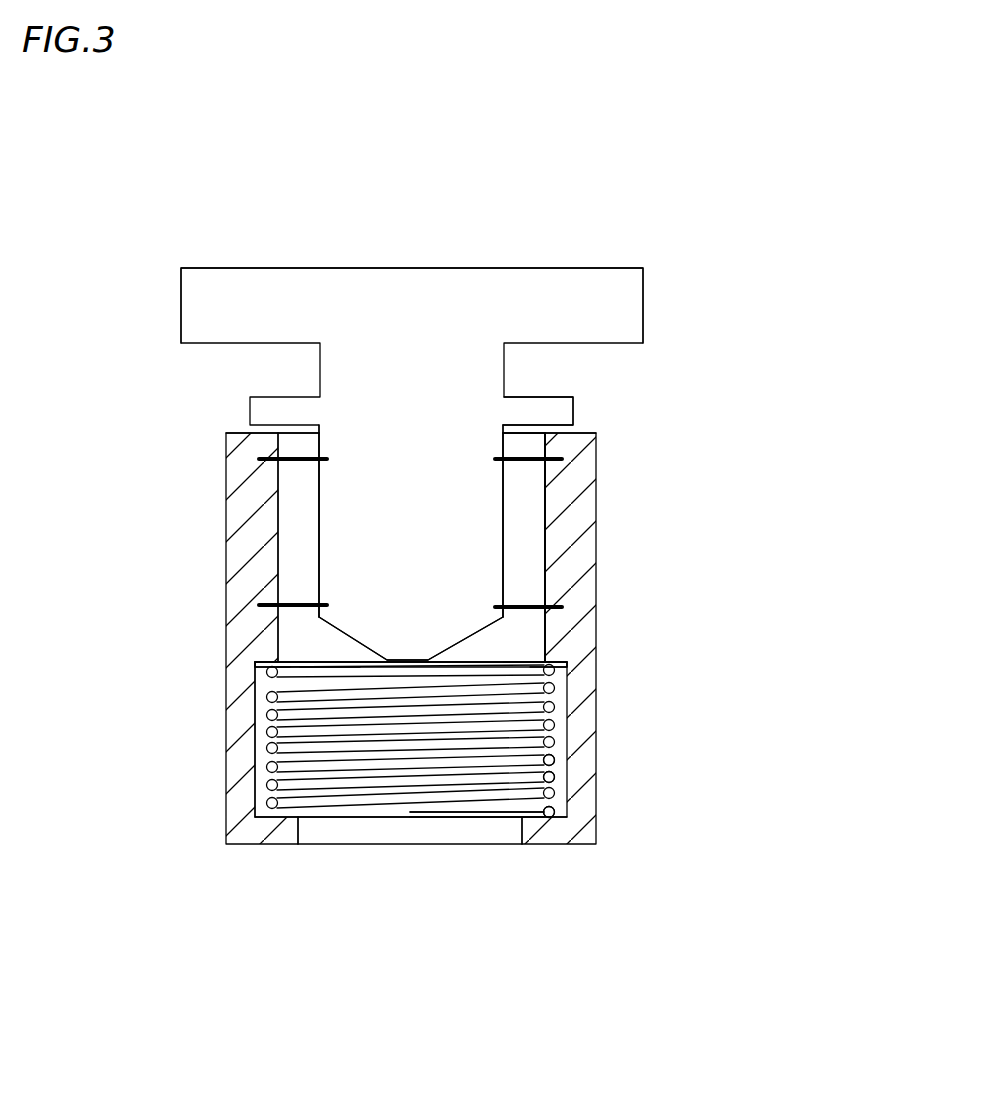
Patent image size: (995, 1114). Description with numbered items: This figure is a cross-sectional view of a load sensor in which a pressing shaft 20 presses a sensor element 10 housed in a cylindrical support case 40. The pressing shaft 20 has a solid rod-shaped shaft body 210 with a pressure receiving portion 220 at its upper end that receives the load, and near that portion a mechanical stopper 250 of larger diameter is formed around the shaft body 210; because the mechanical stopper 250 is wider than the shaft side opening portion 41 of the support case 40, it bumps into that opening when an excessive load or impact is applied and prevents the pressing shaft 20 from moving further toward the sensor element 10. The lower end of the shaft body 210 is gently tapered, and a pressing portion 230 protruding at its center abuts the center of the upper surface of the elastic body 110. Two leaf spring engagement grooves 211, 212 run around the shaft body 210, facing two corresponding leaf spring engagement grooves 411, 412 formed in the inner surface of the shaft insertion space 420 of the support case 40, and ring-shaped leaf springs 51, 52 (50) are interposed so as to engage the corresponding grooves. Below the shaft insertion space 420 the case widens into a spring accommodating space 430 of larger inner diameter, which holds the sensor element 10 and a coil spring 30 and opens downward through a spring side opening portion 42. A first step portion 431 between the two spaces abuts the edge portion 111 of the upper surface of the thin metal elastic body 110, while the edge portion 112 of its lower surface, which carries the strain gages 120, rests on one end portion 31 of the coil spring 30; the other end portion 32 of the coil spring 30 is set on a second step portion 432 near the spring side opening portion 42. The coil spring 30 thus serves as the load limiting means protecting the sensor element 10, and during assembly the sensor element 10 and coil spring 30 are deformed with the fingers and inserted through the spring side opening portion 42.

The pressing shaft 20 is at (558, 268).
The pressure receiving portion 220 is at (625, 315).
The mechanical stopper 250 is at (576, 407).
The shaft body 210 is at (340, 500).
The leaf spring engagement groove 211 is at (312, 480).
The leaf spring engagement groove 212 is at (508, 573).
The pressing portion 230 is at (374, 668).
The support case 40 is at (598, 585).
The shaft side opening portion 41 is at (283, 434).
The spring side opening portion 42 is at (300, 833).
The spring accommodating space 430 is at (427, 797).
The first step portion 431 is at (257, 690).
The second step portion 432 is at (510, 818).
The leaf spring engagement groove 411 is at (562, 458).
The leaf spring engagement groove 412 is at (263, 603).
The shaft insertion space 420 is at (555, 515).
The ring-shaped leaf springs 50 is at (411, 547).
The ring-shaped leaf spring 51 is at (533, 593).
The ring-shaped leaf spring 52 is at (527, 525).
The sensor element 10 is at (316, 644).
The elastic body 110 is at (513, 660).
The edge portion 111 is at (262, 668).
The edge portion 112 is at (530, 672).
The strain gages 120 is at (331, 672).
The coil spring 30 is at (565, 790).
The one end portion 31 is at (555, 768).
The other end portion 32 is at (578, 818).